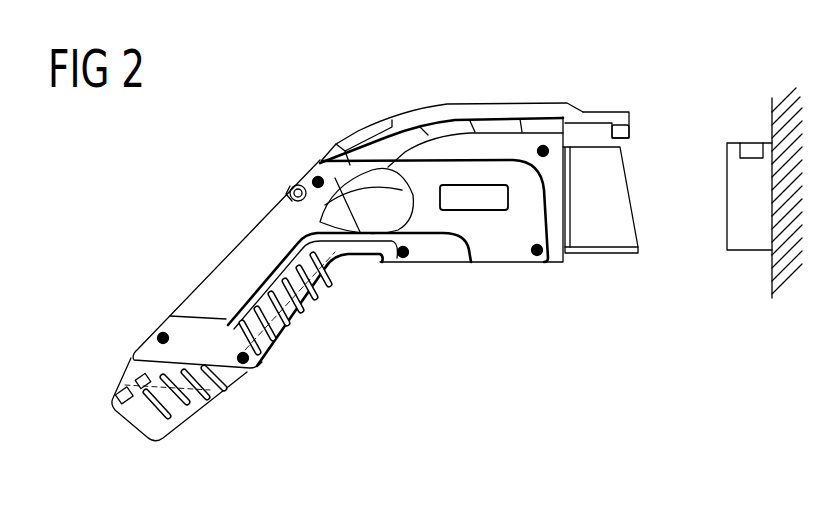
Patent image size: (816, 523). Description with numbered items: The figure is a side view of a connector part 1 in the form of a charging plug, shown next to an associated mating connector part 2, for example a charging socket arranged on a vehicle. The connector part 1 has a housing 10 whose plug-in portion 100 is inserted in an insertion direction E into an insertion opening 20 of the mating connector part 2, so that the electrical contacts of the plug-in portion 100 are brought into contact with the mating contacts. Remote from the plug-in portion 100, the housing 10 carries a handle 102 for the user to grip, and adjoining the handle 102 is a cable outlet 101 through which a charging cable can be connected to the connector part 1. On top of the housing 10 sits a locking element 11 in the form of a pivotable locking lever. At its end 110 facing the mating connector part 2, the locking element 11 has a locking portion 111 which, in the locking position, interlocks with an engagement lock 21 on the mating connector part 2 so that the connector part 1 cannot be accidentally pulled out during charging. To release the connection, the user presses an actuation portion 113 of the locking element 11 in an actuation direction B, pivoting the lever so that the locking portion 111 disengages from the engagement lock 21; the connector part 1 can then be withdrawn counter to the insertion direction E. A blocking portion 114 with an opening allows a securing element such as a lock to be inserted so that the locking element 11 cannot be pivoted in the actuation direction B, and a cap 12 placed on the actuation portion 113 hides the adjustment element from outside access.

The connector part 1 is at (303, 143).
The mating connector part 2 is at (750, 253).
The housing 10 is at (498, 252).
The locking element 11 is at (492, 101).
The cap 12 is at (372, 125).
The insertion opening 20 is at (716, 163).
The engagement lock 21 is at (750, 122).
The plug-in portion 100 is at (608, 233).
The cable outlet 101 is at (177, 423).
The handle 102 is at (237, 262).
The end 110 is at (608, 117).
The locking portion 111 is at (630, 128).
The actuation portion 113 is at (406, 110).
The blocking portion 114 is at (289, 192).
The actuation direction B is at (339, 74).
The insertion direction E is at (703, 198).